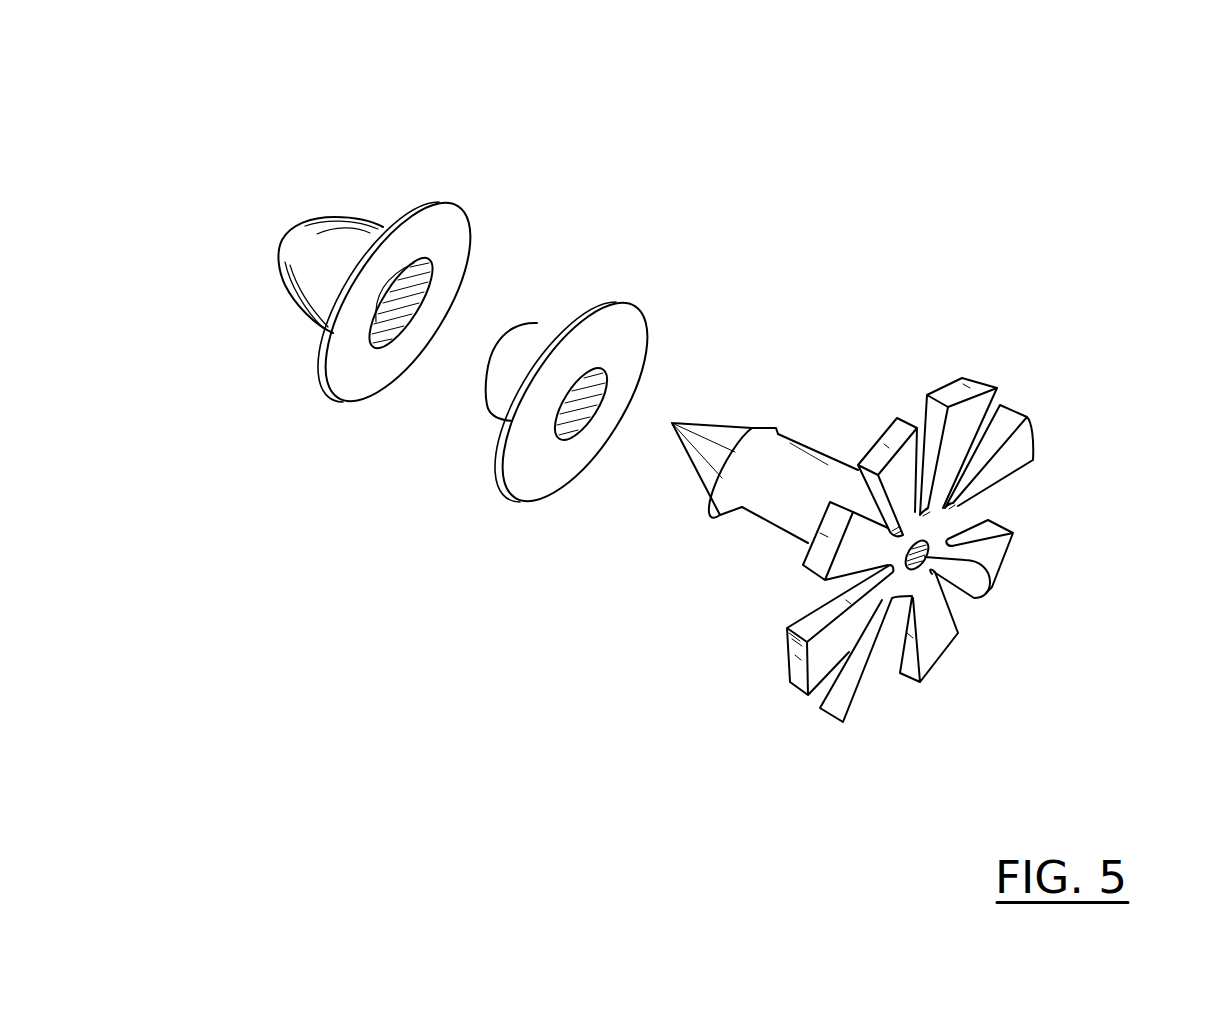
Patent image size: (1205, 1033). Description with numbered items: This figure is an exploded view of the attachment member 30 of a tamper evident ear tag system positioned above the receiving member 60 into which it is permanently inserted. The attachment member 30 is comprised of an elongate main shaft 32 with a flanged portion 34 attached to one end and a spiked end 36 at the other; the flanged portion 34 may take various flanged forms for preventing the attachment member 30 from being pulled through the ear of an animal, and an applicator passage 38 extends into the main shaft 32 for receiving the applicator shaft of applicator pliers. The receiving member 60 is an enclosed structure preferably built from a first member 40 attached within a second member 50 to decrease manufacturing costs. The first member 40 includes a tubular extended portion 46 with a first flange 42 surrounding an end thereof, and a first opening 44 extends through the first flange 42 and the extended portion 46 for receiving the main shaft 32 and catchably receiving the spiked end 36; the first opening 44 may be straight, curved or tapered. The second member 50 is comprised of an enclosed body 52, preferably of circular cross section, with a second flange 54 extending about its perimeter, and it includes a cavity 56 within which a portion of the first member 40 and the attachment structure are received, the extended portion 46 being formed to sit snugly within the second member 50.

The attachment member 30 is at (919, 512).
The main shaft 32 is at (823, 470).
The flanged portion 34 is at (934, 652).
The spiked end 36 is at (725, 430).
The applicator passage 38 is at (988, 590).
The first member 40 is at (673, 415).
The first flange 42 is at (617, 337).
The first opening 44 is at (674, 421).
The extended portion 46 is at (542, 337).
The second member 50 is at (296, 236).
The enclosed body 52 is at (322, 305).
The second flange 54 is at (393, 375).
The cavity 56 is at (420, 291).
The receiving member 60 is at (378, 248).